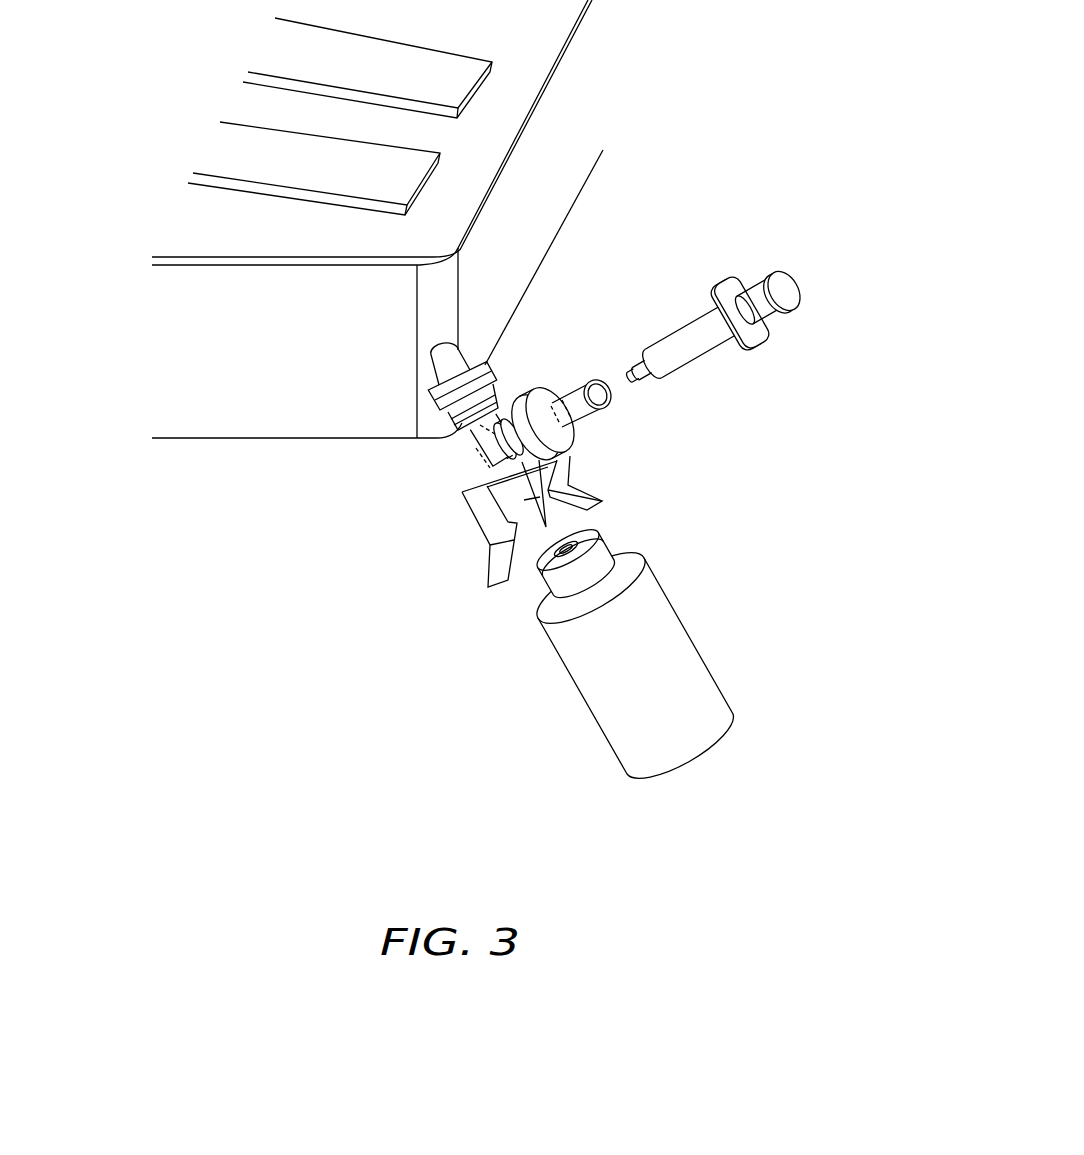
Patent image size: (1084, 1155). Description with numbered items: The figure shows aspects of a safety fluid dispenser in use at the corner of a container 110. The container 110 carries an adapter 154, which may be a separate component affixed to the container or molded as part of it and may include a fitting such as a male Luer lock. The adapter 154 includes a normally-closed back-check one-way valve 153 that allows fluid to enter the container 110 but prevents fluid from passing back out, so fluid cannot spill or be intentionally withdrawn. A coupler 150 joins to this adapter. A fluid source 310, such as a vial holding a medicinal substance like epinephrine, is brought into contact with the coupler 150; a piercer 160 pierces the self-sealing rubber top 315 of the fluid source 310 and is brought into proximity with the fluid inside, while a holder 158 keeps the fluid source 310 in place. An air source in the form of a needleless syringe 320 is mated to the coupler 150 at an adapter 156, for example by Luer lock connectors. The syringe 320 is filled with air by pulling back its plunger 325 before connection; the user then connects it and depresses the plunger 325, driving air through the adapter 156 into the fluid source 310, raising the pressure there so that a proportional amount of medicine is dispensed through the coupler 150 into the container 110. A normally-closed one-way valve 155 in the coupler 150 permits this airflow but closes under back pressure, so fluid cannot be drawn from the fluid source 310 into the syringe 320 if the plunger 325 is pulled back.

The container 110 is at (226, 426).
The coupler 150 is at (477, 453).
The one-way valve 153 is at (465, 444).
The adapter 154 is at (460, 349).
The one-way valve 155 is at (577, 457).
The adapter 156 is at (588, 379).
The holder 158 is at (487, 568).
The piercer 160 is at (598, 510).
The fluid source 310 is at (561, 670).
The self-sealing rubber top 315 is at (535, 566).
The needleless syringe 320 is at (713, 355).
The plunger 325 is at (795, 303).